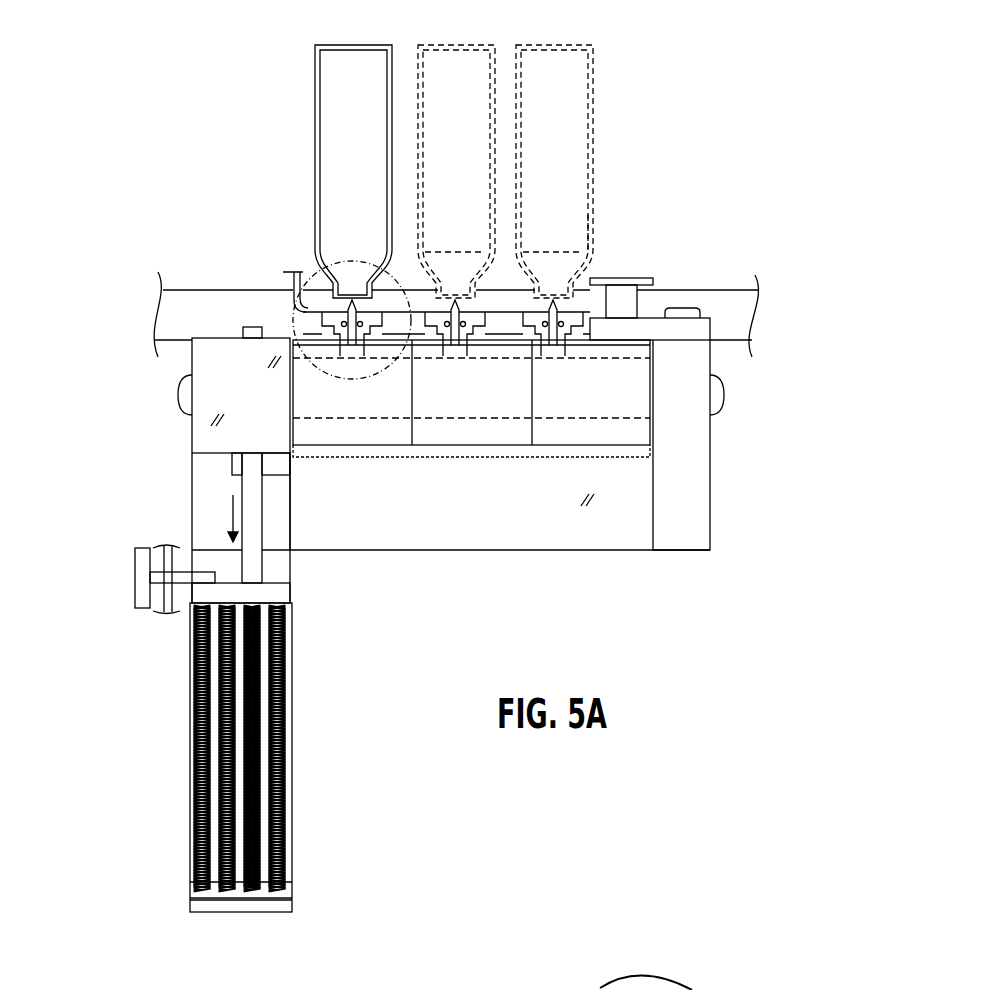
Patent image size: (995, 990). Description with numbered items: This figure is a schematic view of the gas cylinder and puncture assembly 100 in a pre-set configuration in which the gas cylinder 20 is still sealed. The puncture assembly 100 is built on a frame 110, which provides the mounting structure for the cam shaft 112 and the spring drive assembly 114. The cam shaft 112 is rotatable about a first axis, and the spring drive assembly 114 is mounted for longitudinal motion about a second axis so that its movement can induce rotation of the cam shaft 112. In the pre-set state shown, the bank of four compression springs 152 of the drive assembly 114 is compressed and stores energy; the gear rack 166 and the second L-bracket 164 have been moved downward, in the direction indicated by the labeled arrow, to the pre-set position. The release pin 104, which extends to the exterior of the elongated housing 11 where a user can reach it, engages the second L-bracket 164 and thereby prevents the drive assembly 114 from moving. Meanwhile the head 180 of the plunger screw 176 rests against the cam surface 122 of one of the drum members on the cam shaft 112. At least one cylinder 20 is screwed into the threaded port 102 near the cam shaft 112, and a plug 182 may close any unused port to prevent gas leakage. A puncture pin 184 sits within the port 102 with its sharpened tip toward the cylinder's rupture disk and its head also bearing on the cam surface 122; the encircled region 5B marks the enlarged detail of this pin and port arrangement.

The puncture assembly 100 is at (197, 213).
The gas cylinder 20 is at (312, 44).
The plug 182 is at (598, 229).
The detail view of puncture pin in port 5B is at (320, 253).
The threaded port 102 is at (378, 293).
The puncture pin 184 is at (340, 333).
The plunger screw 176 is at (623, 277).
The cam surface 122 is at (593, 353).
The head of plunger screw 180 is at (660, 337).
The cam shaft 112 is at (725, 393).
The frame 110 is at (673, 492).
The spring drive assembly 114 is at (170, 488).
The gear rack 166 is at (250, 525).
The second L-bracket 164 is at (275, 595).
The release pin 104 is at (143, 568).
The elongated housing 11 is at (157, 545).
The compression springs 152 is at (285, 740).